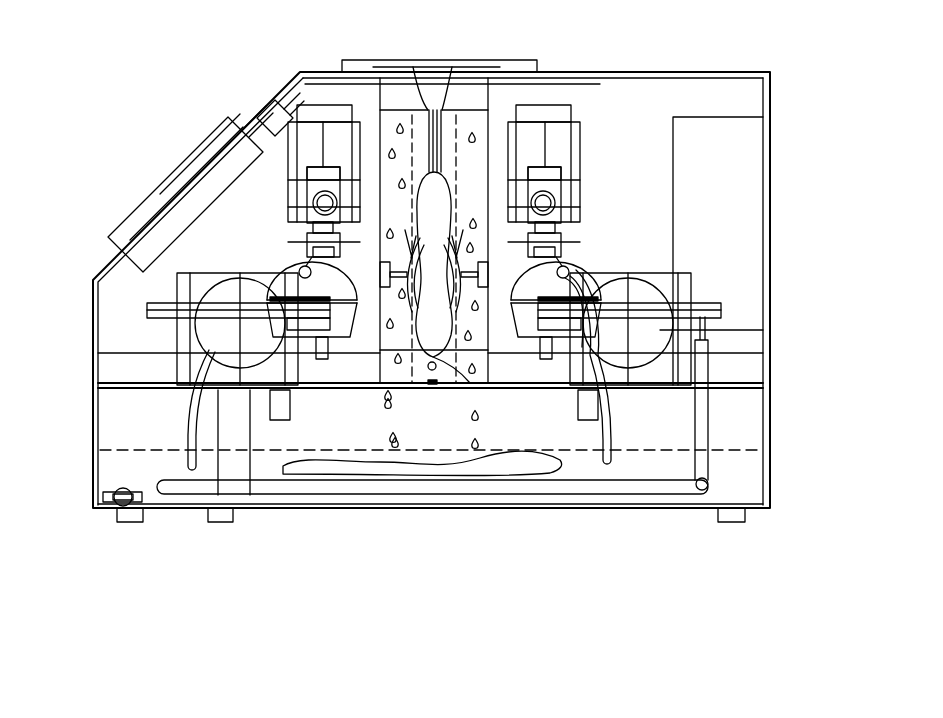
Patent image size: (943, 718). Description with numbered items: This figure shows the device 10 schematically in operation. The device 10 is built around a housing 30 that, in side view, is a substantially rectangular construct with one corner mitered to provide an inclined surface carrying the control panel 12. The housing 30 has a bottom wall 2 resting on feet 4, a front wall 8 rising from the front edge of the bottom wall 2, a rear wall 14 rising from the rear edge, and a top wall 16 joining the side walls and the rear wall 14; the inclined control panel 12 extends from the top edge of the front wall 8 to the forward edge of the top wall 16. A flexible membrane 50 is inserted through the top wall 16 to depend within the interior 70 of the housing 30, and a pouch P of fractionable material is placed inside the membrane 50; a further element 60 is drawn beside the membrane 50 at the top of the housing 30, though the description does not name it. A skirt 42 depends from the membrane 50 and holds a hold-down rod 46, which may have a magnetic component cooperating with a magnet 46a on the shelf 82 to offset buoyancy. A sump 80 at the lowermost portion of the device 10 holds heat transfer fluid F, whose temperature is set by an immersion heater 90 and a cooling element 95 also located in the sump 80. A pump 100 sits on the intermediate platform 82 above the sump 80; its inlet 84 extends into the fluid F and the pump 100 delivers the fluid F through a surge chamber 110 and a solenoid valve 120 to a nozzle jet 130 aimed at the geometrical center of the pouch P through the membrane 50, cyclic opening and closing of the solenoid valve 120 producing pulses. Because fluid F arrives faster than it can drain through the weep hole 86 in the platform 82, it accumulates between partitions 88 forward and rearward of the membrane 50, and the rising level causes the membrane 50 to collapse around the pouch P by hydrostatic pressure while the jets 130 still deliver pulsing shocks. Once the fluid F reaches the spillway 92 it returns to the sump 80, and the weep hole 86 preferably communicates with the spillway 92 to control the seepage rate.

The bottom wall 2 is at (277, 510).
The feet 4 is at (130, 521).
The front wall 8 is at (96, 325).
The device 10 is at (778, 47).
The control panel 12 is at (246, 126).
The rear wall 14 is at (770, 300).
The top wall 16 is at (694, 73).
The housing 30 is at (772, 222).
The skirt 42 is at (433, 358).
The hold-down rod 46 is at (452, 460).
The magnet 46a is at (437, 450).
The flexible membrane 50 is at (432, 62).
The right mounting block 60 is at (504, 60).
The interior 70 is at (392, 90).
The sump 80 is at (430, 438).
The shelf 82 is at (735, 380).
The inlet 84 is at (187, 423).
The weep hole 86 is at (404, 505).
The partitions 88 is at (381, 82).
The immersion heater 90 is at (647, 490).
The spillway 92 is at (470, 127).
The cooling element 95 is at (451, 480).
The pump 100 is at (175, 284).
The surge chamber 110 is at (300, 268).
The solenoid valve 120 is at (307, 113).
The nozzle jet 130 is at (410, 345).
The heat transfer fluid F is at (124, 481).
The pouch P is at (443, 207).